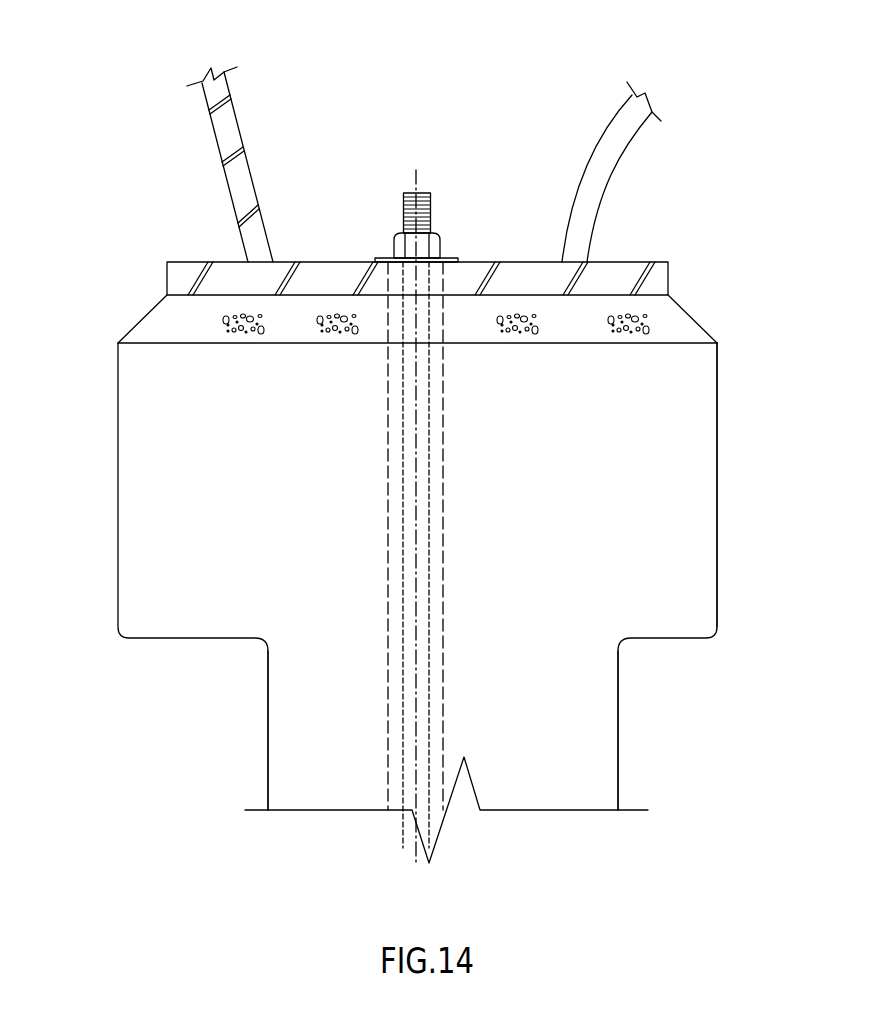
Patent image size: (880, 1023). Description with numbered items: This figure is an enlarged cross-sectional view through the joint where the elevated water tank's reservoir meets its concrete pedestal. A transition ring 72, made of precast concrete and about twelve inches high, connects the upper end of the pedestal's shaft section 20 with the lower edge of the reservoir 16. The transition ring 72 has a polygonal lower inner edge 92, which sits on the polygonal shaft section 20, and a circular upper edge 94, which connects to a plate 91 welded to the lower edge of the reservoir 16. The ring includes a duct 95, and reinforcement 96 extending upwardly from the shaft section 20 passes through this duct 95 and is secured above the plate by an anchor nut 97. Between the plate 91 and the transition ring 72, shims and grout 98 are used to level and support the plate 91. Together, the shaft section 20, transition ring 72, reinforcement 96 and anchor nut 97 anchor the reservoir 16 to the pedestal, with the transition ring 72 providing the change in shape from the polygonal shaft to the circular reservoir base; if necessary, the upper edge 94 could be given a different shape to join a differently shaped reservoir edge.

The reservoir 16 is at (170, 164).
The shaft section 20 is at (344, 810).
The transition ring 72 is at (364, 576).
The plate 91 is at (355, 236).
The polygonal lower inner edge 92 is at (329, 730).
The circular upper edge 94 is at (773, 468).
The duct 95 is at (608, 536).
The reinforcement 96 is at (616, 555).
The anchor nut 97 is at (482, 446).
The shims and grout 98 is at (373, 293).